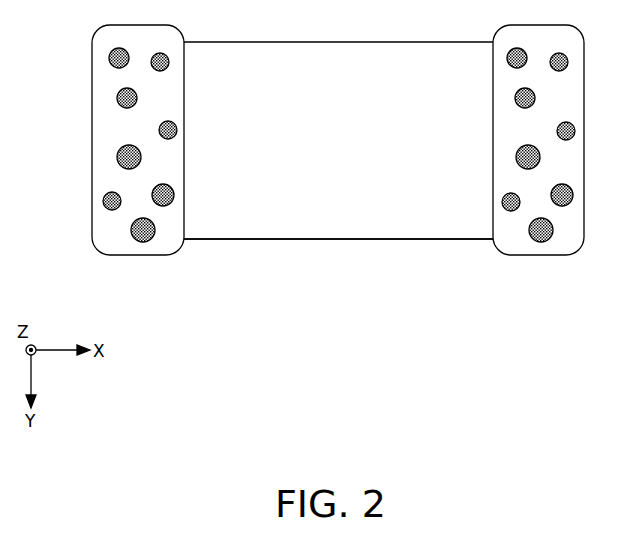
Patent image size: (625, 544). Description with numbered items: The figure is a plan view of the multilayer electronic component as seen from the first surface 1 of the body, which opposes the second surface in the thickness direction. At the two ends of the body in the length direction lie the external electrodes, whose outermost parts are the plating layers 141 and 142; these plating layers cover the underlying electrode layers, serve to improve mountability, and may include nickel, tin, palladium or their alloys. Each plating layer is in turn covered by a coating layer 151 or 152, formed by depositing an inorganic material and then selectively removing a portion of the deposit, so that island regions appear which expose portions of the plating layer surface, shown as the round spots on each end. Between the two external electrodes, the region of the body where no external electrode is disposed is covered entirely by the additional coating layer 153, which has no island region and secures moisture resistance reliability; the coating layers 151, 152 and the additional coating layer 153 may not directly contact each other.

The first surface 1 is at (281, 192).
The plating layer 141 is at (109, 250).
The plating layer 142 is at (572, 243).
The coating layer 151 is at (141, 243).
The coating layer 152 is at (541, 243).
The additional coating layer 153 is at (395, 222).